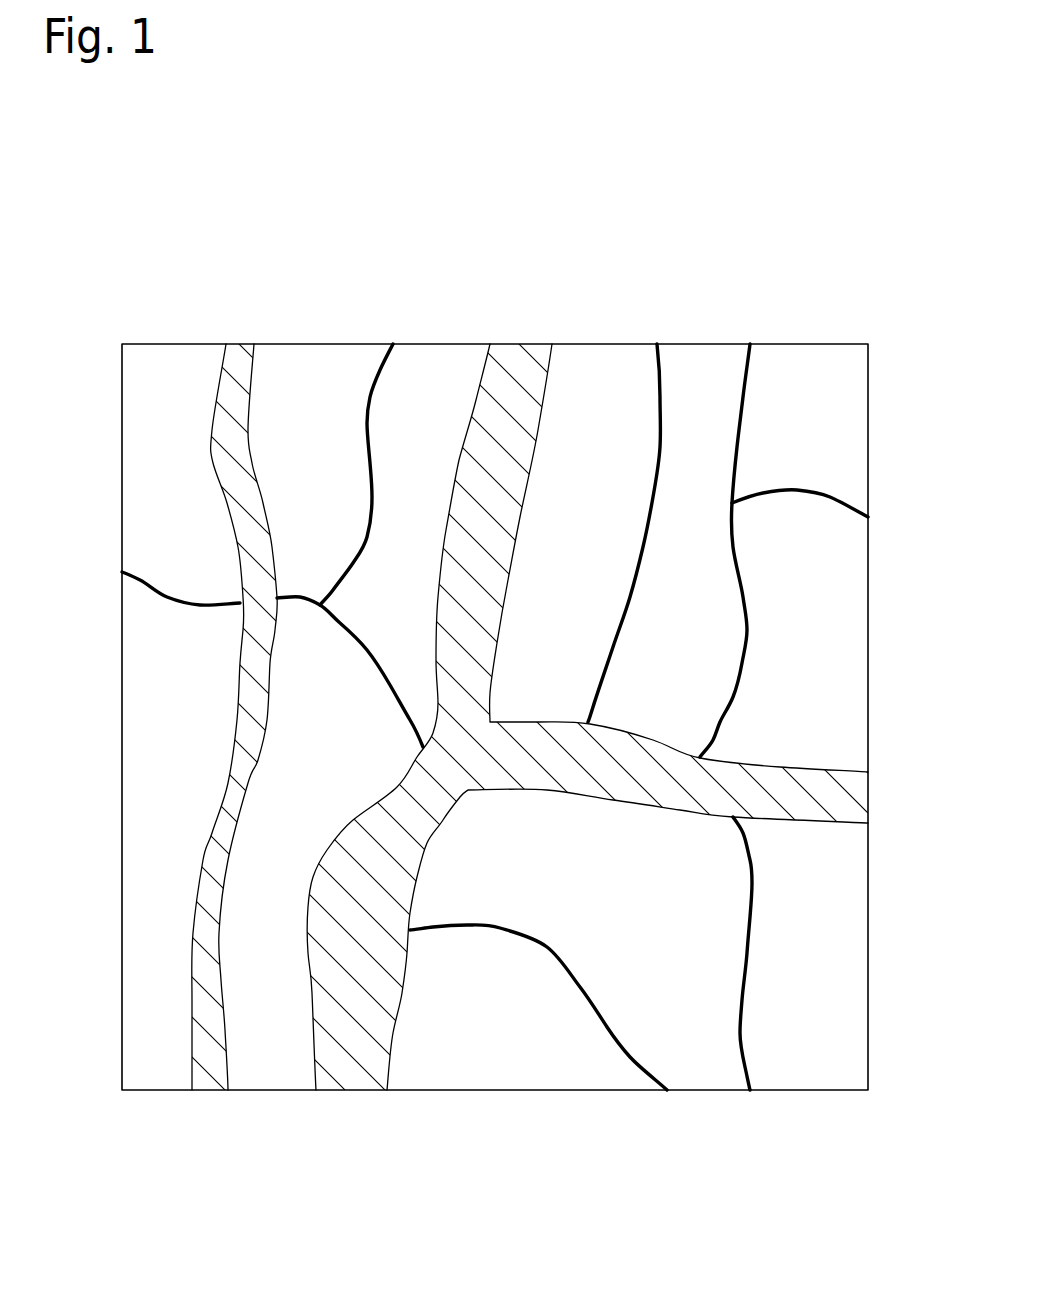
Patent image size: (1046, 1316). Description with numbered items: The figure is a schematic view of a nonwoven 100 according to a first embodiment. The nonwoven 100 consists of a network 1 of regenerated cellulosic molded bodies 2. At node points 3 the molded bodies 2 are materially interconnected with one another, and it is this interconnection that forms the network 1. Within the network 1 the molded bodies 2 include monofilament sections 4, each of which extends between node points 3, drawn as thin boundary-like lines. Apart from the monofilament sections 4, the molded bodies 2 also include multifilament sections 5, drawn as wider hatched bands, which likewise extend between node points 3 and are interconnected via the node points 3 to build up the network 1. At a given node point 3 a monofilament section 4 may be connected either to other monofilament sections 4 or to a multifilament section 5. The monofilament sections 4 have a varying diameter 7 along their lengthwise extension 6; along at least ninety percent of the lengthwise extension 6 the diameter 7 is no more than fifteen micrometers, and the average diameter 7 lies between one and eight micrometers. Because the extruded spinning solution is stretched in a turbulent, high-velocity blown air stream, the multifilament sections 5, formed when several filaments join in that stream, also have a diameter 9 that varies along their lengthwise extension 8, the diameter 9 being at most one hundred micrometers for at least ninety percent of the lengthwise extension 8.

The nonwoven 100 is at (802, 147).
The network 1 is at (297, 367).
The regenerated cellulosic molded bodies 2 is at (203, 597).
The node points 3 is at (280, 607).
The monofilament sections 4 is at (170, 600).
The multifilament sections 5 is at (257, 530).
The lengthwise extension 6 is at (358, 657).
The diameter 7 is at (393, 463).
The lengthwise extension 8 is at (248, 443).
The diameter 9 is at (448, 527).